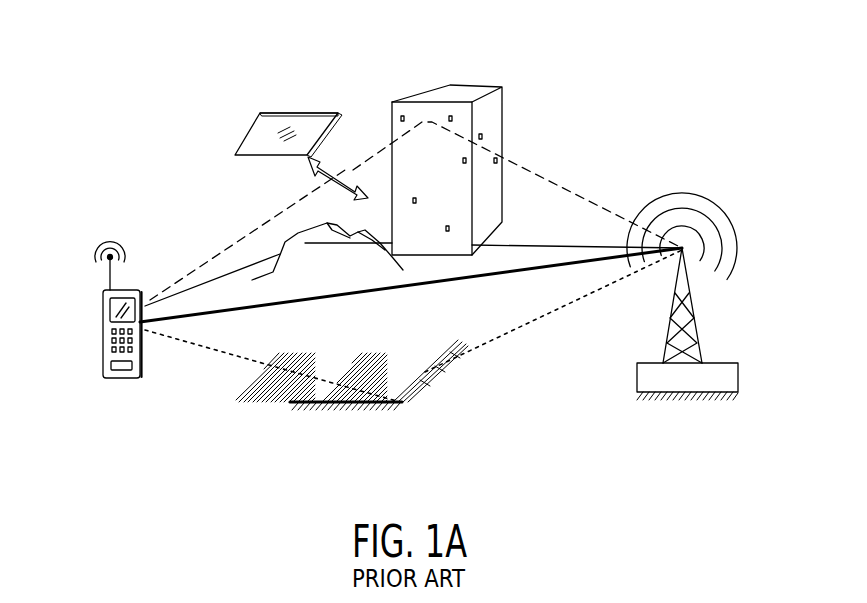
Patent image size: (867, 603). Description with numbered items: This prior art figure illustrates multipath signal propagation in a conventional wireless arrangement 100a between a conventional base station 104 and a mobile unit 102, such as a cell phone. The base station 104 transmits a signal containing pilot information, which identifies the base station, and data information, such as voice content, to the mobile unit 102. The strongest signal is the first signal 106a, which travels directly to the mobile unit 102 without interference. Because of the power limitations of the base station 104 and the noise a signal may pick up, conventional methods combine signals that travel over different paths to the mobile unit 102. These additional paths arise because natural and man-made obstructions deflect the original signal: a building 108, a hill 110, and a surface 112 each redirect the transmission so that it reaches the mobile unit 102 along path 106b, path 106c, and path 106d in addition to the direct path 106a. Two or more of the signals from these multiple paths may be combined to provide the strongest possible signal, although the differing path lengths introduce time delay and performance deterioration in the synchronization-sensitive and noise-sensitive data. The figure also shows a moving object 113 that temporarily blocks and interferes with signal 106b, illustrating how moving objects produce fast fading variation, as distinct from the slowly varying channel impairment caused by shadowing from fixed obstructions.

The prior art wireless communication system 100a is at (735, 55).
The mobile unit 102 is at (102, 364).
The base station 104 is at (705, 340).
The first signal 106a is at (293, 305).
The signal 106b is at (522, 160).
The path 106c is at (433, 388).
The path 106d is at (207, 280).
The building 108 is at (448, 176).
The hill 110 is at (345, 279).
The surface 112 is at (290, 403).
The moving object 113 is at (248, 134).